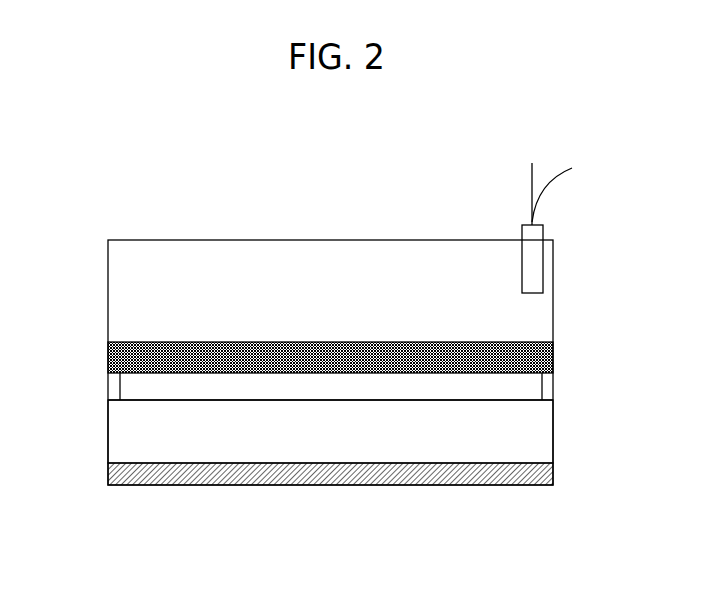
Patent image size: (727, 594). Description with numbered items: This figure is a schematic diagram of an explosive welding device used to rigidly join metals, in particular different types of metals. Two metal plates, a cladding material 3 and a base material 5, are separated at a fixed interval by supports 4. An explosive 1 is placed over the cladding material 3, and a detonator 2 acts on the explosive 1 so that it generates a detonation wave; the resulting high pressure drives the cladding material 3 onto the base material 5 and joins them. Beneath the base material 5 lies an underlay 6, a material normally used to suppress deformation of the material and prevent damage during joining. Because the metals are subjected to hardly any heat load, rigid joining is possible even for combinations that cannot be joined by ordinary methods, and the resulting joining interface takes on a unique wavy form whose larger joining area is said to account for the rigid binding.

The explosive 1 is at (270, 292).
The detonator 2 is at (533, 275).
The cladding material 3 is at (137, 358).
The support 4 is at (547, 382).
The base material 5 is at (137, 448).
The underlay 6 is at (357, 475).